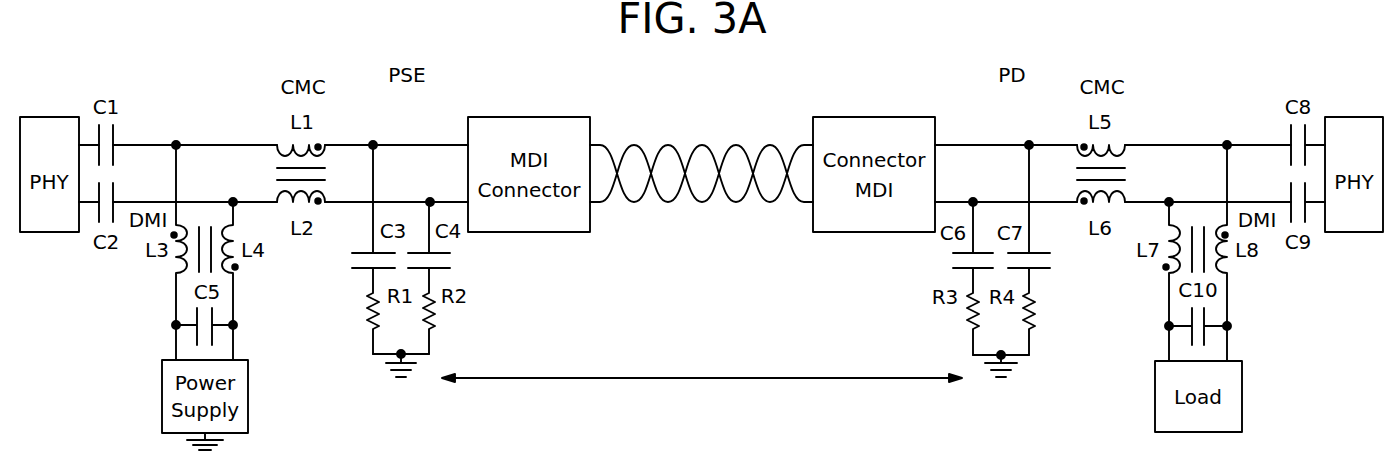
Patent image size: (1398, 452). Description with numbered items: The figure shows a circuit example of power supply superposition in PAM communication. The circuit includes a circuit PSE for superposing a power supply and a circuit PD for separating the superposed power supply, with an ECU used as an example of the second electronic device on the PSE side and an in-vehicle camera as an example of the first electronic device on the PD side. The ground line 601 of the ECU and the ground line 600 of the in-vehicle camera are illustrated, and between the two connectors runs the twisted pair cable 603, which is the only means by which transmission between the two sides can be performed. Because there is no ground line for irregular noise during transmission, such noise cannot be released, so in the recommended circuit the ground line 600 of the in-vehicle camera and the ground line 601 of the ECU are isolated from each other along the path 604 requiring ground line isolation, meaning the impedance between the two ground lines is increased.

The ground line of the in-vehicle camera 600 is at (1013, 377).
The ground line of the ECU 601 is at (237, 450).
The twisted pair cable 603 is at (703, 146).
The path requiring the ground line isolation 604 is at (697, 380).